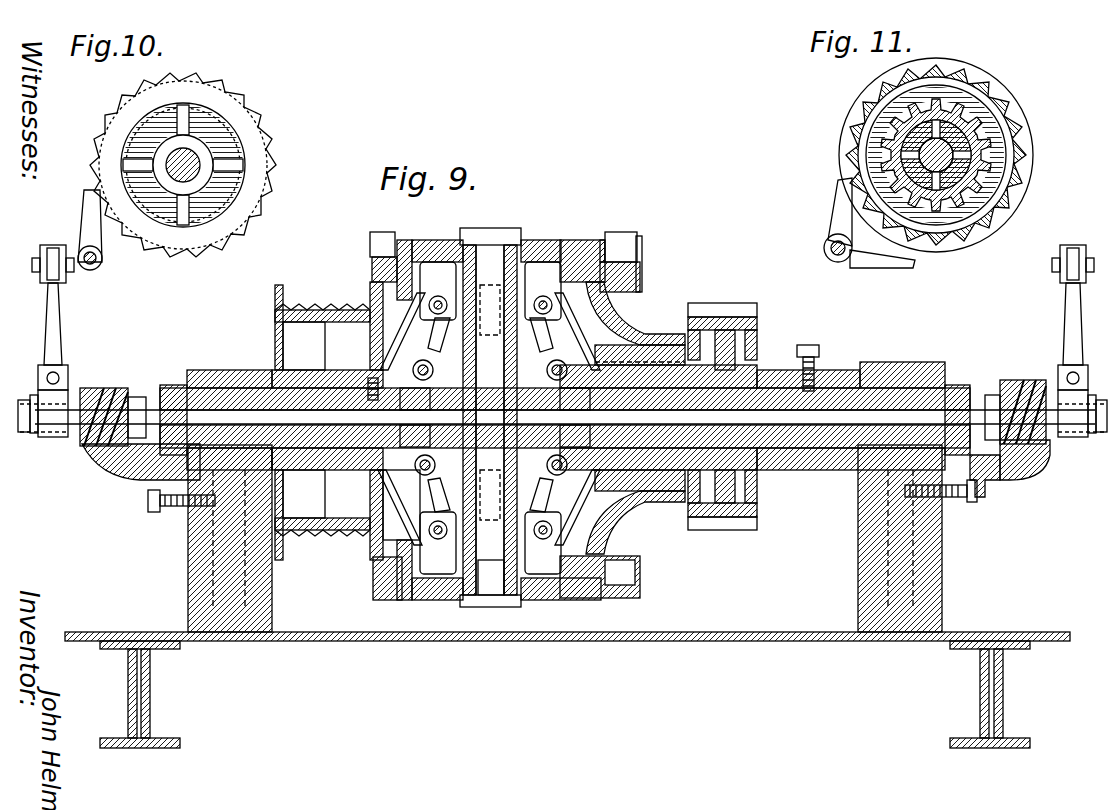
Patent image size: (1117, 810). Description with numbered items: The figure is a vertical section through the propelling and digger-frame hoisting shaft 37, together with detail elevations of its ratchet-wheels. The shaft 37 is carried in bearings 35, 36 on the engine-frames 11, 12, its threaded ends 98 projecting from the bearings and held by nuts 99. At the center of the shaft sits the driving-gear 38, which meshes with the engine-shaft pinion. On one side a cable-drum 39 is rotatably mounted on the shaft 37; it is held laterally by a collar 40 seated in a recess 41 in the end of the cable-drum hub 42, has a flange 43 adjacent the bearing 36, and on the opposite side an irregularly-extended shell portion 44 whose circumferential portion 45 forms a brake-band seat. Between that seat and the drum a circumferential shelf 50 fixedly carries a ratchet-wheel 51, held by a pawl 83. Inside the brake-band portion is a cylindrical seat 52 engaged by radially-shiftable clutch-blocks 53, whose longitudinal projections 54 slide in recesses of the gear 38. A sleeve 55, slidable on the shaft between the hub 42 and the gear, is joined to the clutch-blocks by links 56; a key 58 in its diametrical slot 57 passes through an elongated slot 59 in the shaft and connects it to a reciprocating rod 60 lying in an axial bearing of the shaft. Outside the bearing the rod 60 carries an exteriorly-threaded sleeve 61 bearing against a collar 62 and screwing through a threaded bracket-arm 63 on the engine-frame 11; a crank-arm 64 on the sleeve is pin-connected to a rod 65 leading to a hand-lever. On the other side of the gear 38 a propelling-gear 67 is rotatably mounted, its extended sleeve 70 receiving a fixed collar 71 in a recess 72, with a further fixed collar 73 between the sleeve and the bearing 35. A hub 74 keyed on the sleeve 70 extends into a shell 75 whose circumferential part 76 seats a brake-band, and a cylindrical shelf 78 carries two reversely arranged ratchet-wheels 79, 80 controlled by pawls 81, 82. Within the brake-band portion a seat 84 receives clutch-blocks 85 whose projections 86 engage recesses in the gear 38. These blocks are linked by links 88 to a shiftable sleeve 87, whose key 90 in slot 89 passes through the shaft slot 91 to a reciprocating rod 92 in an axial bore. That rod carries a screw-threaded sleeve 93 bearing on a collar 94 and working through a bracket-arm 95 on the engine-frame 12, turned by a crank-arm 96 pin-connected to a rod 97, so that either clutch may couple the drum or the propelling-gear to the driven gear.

In FIG. 9, the engine-frame 11 is at (190, 580).
In FIG. 9, the engine-frame 12 is at (943, 582).
In FIG. 9, the bearing 35 is at (900, 362).
In FIG. 9, the bearing 36 is at (205, 370).
In FIG. 9, the shaft 37 is at (232, 398).
In FIG. 10, the shaft 37 is at (195, 158).
In FIG. 11, the shaft 37 is at (950, 145).
In FIG. 9, the driving-gear 38 is at (495, 245).
In FIG. 9, the cable-drum 39 is at (310, 310).
In FIG. 10, the cable-drum 39 is at (245, 155).
In FIG. 9, the collar 40 is at (390, 480).
In FIG. 9, the recess 41 is at (373, 378).
In FIG. 9, the cable-drum hub 42 is at (304, 346).
In FIG. 9, the flange 43 is at (279, 285).
In FIG. 9, the shell portion 44 is at (395, 340).
In FIG. 9, the circumferential portion 45 is at (408, 240).
In FIG. 10, the circumferential portion 45 is at (272, 175).
In FIG. 9, the circumferential shelf 50 is at (372, 262).
In FIG. 9, the ratchet-wheel 51 is at (380, 232).
In FIG. 10, the ratchet-wheel 51 is at (140, 240).
In FIG. 9, the cylindrical seat 52 is at (470, 228).
In FIG. 9, the clutch-blocks 53 is at (438, 418).
In FIG. 9, the projections 54 is at (478, 607).
In FIG. 9, the sleeve 55 is at (418, 470).
In FIG. 9, the links 56 is at (435, 414).
In FIG. 9, the slot 57 is at (416, 366).
In FIG. 9, the key 58 is at (415, 398).
In FIG. 9, the elongated slot 59 is at (415, 433).
In FIG. 9, the reciprocating rod 60 is at (304, 494).
In FIG. 10, the reciprocating rod 60 is at (172, 160).
In FIG. 9, the exteriorly-threaded sleeve 61 is at (108, 388).
In FIG. 9, the collar 62 is at (137, 397).
In FIG. 9, the bracket-arm 63 is at (68, 392).
In FIG. 9, the crank-arm 64 is at (60, 330).
In FIG. 9, the rod 65 is at (52, 245).
In FIG. 9, the propelling-gear 67 is at (725, 303).
In FIG. 11, the propelling-gear 67 is at (985, 150).
In FIG. 9, the extended sleeve 70 is at (655, 500).
In FIG. 9, the collar 71 is at (577, 507).
In FIG. 9, the recess 72 is at (566, 372).
In FIG. 9, the collar 73 is at (820, 372).
In FIG. 9, the hub 74 is at (655, 345).
In FIG. 9, the shell 75 is at (608, 285).
In FIG. 9, the circumferential part 76 is at (578, 240).
In FIG. 9, the cylindrical shelf 78 is at (640, 268).
In FIG. 9, the ratchet-wheel 79 is at (625, 236).
In FIG. 11, the ratchet-wheel 79 is at (955, 235).
In FIG. 9, the ratchet-wheel 80 is at (642, 236).
In FIG. 11, the ratchet-wheel 80 is at (840, 150).
In FIG. 11, the pawl 81 is at (835, 210).
In FIG. 11, the pawl 82 is at (900, 268).
In FIG. 10, the pawl 83 is at (90, 220).
In FIG. 9, the seat 84 is at (540, 240).
In FIG. 9, the clutch-blocks 85 is at (561, 431).
In FIG. 9, the projections 86 is at (512, 607).
In FIG. 9, the shiftable sleeve 87 is at (548, 470).
In FIG. 9, the links 88 is at (545, 414).
In FIG. 9, the slot 89 is at (573, 436).
In FIG. 9, the key 90 is at (573, 396).
In FIG. 9, the elongated slot 91 is at (548, 366).
In FIG. 9, the reciprocating rod 92 is at (778, 432).
In FIG. 11, the reciprocating rod 92 is at (905, 145).
In FIG. 9, the exteriorly-screw-threaded sleeve 93 is at (1025, 380).
In FIG. 9, the collar 94 is at (992, 395).
In FIG. 9, the bracket-arm 95 is at (1030, 462).
In FIG. 9, the crank-arm 96 is at (1072, 330).
In FIG. 9, the rod 97 is at (1072, 245).
In FIG. 9, the threaded ends 98 is at (160, 455).
In FIG. 9, the nuts 99 is at (175, 385).